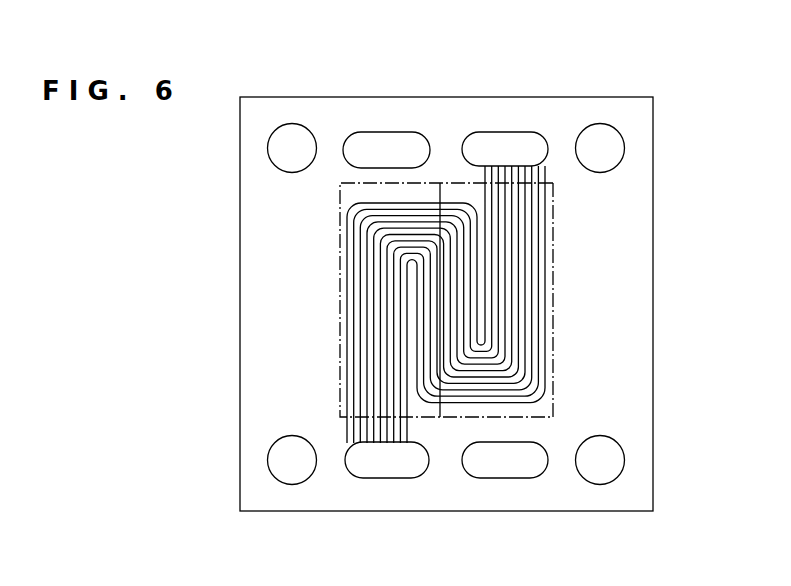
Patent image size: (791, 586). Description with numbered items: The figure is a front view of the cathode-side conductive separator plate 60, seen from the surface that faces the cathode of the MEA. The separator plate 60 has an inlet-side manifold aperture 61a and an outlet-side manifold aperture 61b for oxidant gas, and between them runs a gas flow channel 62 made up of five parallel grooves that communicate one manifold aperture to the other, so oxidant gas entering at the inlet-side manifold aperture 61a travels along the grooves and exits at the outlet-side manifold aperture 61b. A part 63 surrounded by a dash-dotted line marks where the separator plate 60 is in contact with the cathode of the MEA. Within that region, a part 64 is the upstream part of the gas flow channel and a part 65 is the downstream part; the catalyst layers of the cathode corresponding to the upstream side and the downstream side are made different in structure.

The cathode-side separator plate 60 is at (449, 90).
The inlet-side manifold aperture 61a is at (508, 148).
The outlet-side manifold aperture 61b is at (388, 464).
The gas flow channel 62 is at (540, 361).
The contact part 63 is at (545, 198).
The upstream part 64 is at (543, 410).
The downstream part 65 is at (430, 412).